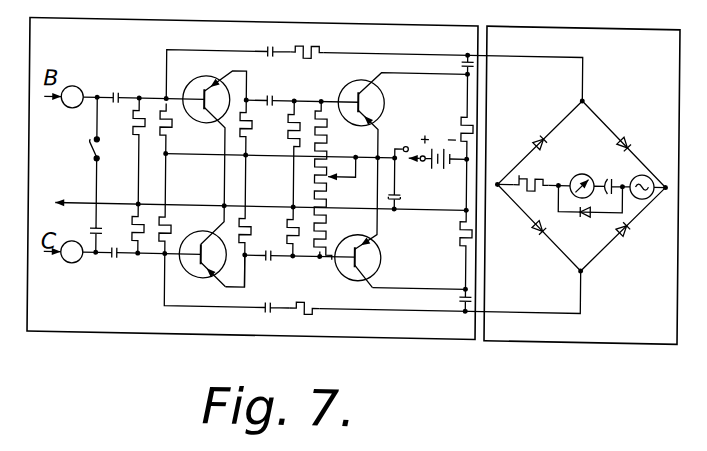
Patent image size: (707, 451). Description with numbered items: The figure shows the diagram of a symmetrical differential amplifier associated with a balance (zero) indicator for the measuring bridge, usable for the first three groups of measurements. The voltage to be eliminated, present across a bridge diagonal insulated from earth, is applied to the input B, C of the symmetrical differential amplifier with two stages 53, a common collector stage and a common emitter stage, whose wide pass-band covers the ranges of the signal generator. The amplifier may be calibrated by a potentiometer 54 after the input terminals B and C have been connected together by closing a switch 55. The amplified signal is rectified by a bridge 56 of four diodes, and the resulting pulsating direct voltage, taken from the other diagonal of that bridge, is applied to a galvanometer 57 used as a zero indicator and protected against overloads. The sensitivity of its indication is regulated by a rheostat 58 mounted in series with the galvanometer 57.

The symmetrical differential amplifier with two stages 53 is at (78, 336).
The potentiometer 54 is at (331, 170).
The switch 55 is at (102, 150).
The bridge of four diodes 56 is at (605, 332).
The galvanometer 57 is at (575, 164).
The rheostat 58 is at (522, 166).